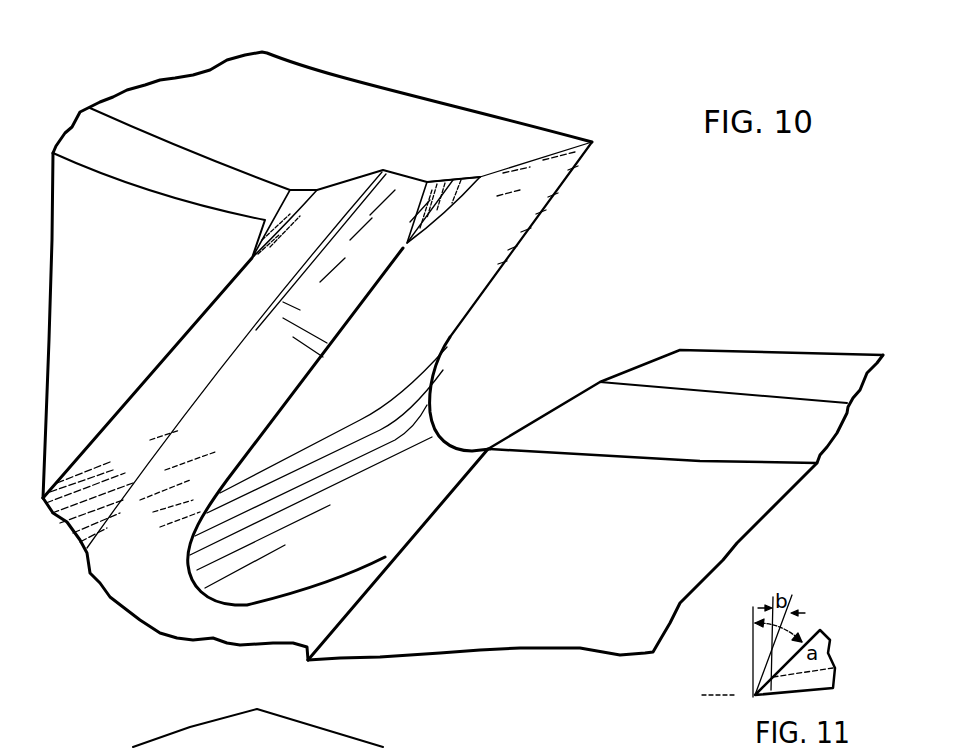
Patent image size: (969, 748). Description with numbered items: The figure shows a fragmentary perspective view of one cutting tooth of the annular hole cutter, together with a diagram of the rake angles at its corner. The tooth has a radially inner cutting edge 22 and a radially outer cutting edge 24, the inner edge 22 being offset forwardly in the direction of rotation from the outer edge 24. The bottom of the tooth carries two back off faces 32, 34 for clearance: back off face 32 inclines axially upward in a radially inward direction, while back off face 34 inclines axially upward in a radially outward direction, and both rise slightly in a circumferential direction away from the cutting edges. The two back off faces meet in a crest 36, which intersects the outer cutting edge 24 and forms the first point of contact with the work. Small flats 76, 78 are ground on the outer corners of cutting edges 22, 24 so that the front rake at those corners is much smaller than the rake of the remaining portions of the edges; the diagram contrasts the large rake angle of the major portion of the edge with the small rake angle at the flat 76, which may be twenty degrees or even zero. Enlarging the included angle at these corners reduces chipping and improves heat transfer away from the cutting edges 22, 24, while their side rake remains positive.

In FIG. 10, the radially inner cutting edge 22 is at (550, 157).
In FIG. 10, the radially outer cutting edge 24 is at (350, 177).
In FIG. 10, the back off face 32 is at (317, 80).
In FIG. 10, the back off face 34 is at (221, 198).
In FIG. 10, the crest 36 is at (805, 395).
In FIG. 10, the flat 76 is at (453, 180).
In FIG. 11, the flat 76 is at (833, 668).
In FIG. 10, the flat 78 is at (288, 190).